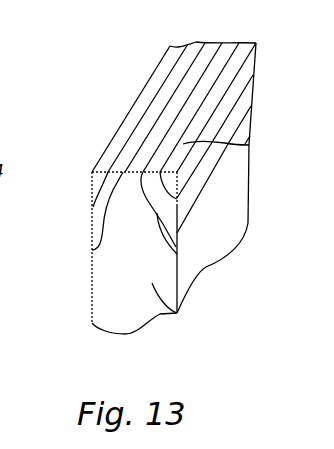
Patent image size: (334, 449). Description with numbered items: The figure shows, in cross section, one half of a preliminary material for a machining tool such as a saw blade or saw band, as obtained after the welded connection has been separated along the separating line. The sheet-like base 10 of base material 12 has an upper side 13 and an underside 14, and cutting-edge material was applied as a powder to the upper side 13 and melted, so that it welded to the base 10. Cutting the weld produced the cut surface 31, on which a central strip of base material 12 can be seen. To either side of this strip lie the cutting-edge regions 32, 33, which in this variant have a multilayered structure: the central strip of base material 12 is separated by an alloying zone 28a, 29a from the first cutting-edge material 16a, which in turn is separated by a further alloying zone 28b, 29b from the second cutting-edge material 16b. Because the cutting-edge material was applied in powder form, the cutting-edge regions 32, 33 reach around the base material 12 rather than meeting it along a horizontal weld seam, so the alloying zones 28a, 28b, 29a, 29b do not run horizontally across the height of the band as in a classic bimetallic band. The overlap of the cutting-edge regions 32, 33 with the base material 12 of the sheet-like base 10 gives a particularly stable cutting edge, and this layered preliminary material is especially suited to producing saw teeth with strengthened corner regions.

The sheet-like base 10 is at (90, 302).
The base material 12 is at (211, 43).
The upper side 13 is at (102, 133).
The underside 14 is at (232, 207).
The first cutting-edge material 16a is at (192, 43).
The second cutting-edge material 16b is at (174, 44).
The alloying zone 28a is at (96, 249).
The alloying zone 28b is at (105, 157).
The alloying zone 29a is at (230, 256).
The alloying zone 29b is at (240, 143).
The cut surface 31 is at (190, 75).
The cutting-edge region 32 is at (118, 108).
The cutting-edge region 33 is at (200, 182).